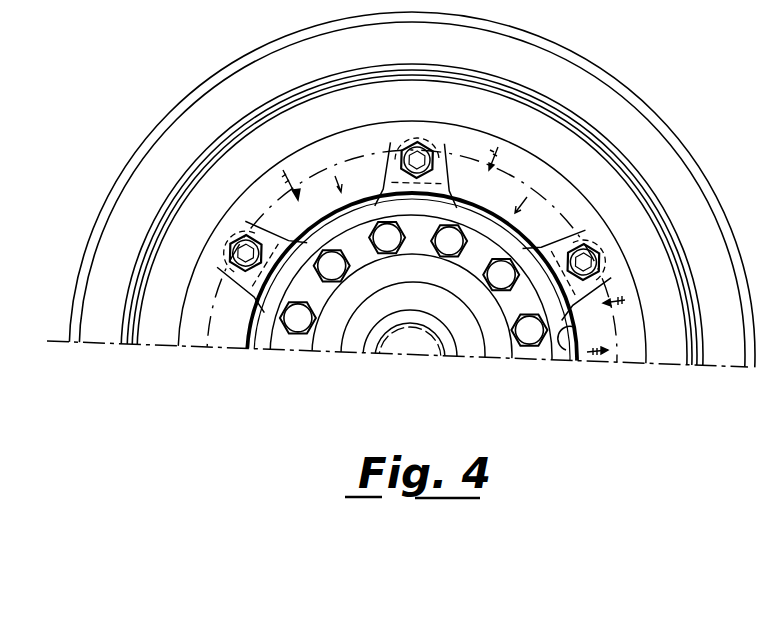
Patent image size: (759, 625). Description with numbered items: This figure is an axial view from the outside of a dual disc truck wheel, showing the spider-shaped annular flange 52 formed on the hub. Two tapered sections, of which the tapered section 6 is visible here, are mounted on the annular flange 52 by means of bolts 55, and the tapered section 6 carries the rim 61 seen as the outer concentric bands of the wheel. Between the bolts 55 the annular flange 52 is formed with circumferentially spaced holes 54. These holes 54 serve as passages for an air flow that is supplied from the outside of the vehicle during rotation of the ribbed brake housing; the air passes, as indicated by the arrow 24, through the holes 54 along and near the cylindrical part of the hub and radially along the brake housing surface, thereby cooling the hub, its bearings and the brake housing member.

The annular flange 52 is at (224, 252).
The bolts 55 is at (210, 348).
The circumferentially spaced holes 54 is at (260, 333).
The tapered section 6 is at (564, 355).
The arrow 24 is at (597, 310).
The rim 61 is at (722, 355).